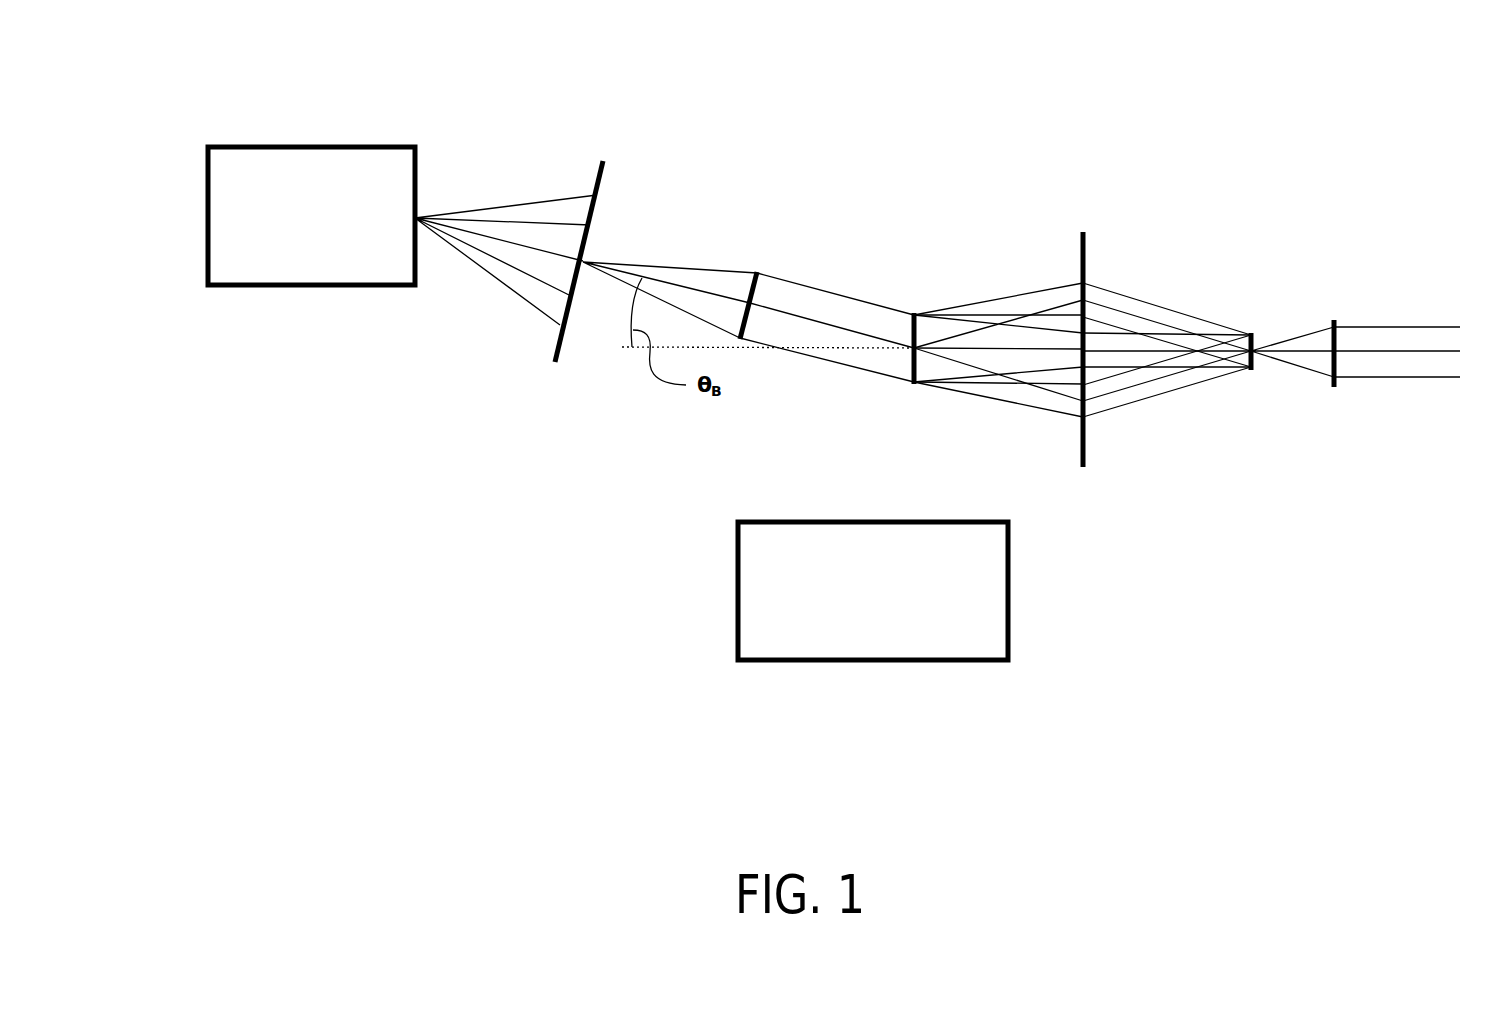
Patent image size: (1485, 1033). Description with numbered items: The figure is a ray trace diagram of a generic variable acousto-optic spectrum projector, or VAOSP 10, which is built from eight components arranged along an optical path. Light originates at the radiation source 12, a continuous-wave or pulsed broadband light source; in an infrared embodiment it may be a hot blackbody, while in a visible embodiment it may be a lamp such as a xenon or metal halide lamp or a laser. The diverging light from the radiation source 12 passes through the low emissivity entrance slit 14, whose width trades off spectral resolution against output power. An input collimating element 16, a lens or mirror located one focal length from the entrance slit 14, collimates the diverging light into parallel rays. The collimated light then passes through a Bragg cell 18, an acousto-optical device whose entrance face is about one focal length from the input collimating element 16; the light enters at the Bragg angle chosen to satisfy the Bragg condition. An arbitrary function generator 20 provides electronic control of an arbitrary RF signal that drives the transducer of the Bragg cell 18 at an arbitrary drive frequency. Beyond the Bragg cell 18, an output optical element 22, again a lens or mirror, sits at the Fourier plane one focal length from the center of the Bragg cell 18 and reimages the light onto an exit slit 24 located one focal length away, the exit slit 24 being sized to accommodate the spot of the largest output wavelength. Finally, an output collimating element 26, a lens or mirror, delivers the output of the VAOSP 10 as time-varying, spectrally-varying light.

The variable acousto-optic spectrum projector (VAOSP) 10 is at (1000, 100).
The radiation source 12 is at (289, 147).
The low emissivity entrance slit 14 is at (606, 165).
The input collimating element 16 is at (750, 273).
The Bragg cell 18 is at (915, 314).
The arbitrary function generator 20 is at (860, 522).
The output optical element 22 is at (1084, 238).
The exit slit 24 is at (1256, 366).
The output collimating element 26 is at (1338, 363).